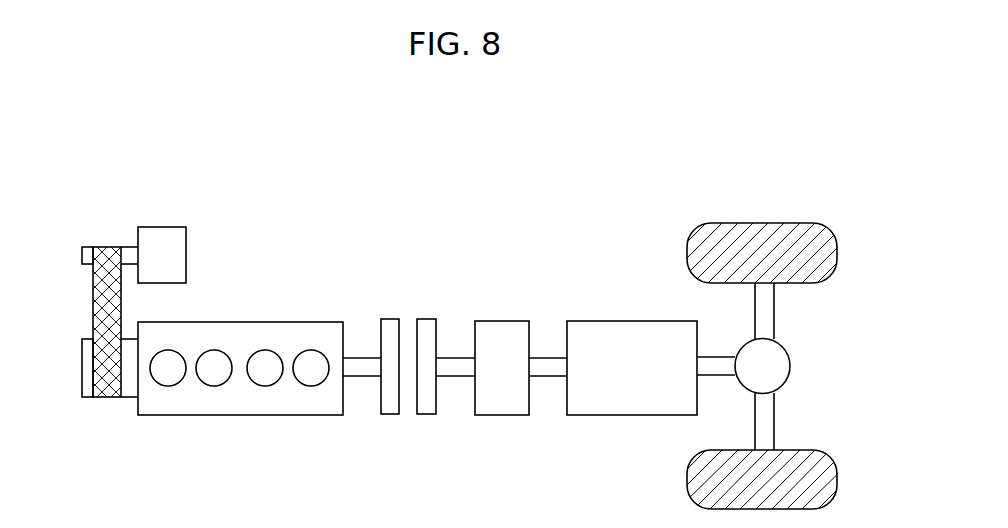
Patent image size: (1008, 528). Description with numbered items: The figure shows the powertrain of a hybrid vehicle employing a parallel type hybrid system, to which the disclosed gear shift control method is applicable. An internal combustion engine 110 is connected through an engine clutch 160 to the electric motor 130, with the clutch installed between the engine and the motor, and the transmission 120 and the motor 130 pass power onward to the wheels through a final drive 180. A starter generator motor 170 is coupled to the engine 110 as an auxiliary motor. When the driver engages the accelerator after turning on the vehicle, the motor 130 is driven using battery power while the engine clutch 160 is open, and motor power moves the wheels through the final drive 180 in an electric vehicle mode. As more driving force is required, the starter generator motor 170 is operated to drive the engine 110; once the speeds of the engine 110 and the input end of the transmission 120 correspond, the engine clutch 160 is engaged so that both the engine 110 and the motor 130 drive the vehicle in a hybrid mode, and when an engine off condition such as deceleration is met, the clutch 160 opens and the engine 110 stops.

The internal combustion engine 110 is at (274, 321).
The transmission 120 is at (500, 319).
The electric motor 130 is at (628, 320).
The engine clutch 160 is at (425, 317).
The starter generator motor 170 is at (160, 226).
The final drive 180 is at (791, 366).